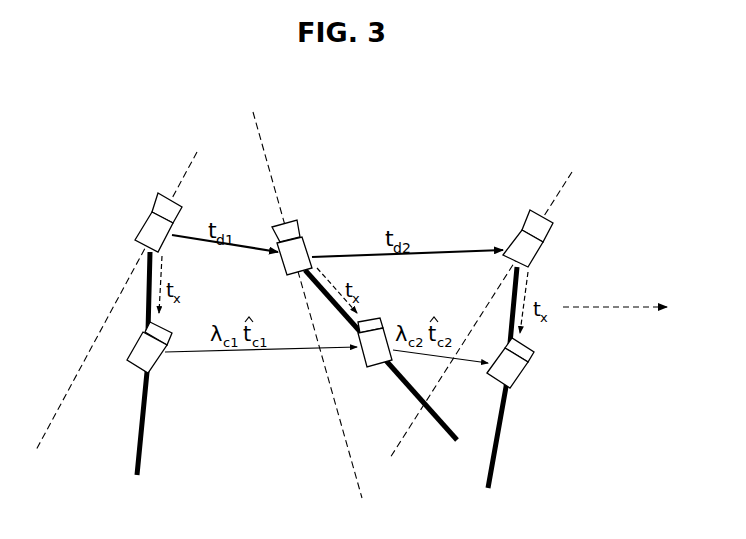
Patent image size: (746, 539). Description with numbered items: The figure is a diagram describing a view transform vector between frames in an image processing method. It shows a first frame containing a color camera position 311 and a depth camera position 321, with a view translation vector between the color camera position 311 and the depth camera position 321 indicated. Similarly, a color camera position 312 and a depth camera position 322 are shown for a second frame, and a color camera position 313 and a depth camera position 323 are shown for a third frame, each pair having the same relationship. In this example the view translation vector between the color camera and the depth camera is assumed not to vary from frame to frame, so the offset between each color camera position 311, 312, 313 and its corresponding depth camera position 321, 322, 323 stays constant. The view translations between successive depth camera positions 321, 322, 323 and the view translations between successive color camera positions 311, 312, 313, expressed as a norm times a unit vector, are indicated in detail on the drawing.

The depth camera position 321 is at (147, 215).
The depth camera position 322 is at (292, 221).
The depth camera position 323 is at (523, 228).
The color camera position 311 is at (153, 358).
The color camera position 312 is at (377, 367).
The color camera position 313 is at (520, 373).